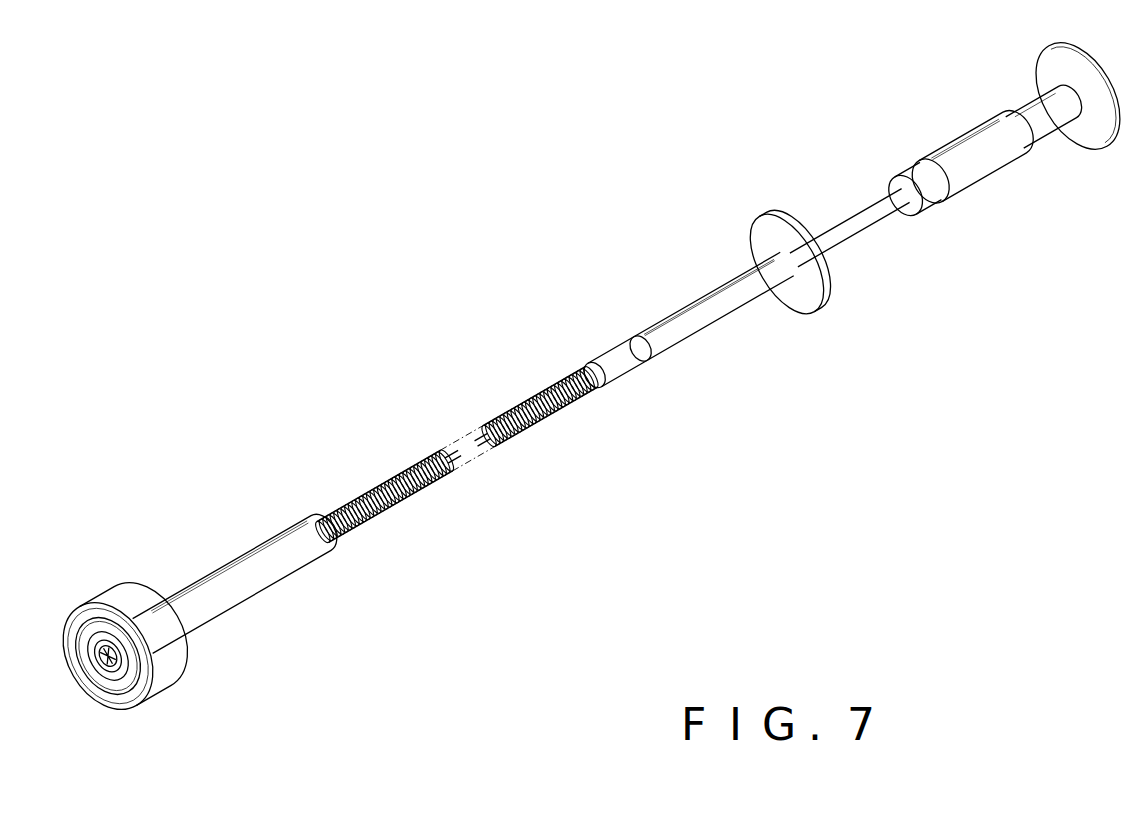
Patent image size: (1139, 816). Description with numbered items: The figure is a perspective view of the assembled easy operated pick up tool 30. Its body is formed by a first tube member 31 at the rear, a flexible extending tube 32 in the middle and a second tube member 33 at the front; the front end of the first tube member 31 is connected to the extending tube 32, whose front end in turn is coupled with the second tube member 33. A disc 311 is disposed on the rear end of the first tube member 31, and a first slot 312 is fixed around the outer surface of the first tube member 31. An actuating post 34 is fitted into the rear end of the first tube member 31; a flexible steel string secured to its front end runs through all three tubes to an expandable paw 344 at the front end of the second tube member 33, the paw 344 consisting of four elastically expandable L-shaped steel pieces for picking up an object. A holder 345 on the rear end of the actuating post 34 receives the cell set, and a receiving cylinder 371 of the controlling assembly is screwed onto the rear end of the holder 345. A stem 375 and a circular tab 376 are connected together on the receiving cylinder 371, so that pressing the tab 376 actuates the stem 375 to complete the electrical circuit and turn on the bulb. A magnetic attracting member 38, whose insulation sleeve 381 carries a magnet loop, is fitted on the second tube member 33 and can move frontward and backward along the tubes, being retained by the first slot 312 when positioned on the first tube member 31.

The easy operated pick up tool 30 is at (423, 286).
The first tube member 31 is at (677, 303).
The disc 311 is at (755, 233).
The first slot 312 is at (633, 340).
The flexible extending tube 32 is at (505, 412).
The second tube member 33 is at (257, 565).
The actuating post 34 is at (852, 235).
The holder 345 is at (908, 178).
The receiving cylinder 371 is at (976, 175).
The stem 375 is at (1040, 135).
The circular tab 376 is at (1087, 140).
The magnetic attracting member 38 is at (90, 627).
The insulation sleeve 381 is at (130, 583).
The expandable paw 344 is at (104, 660).